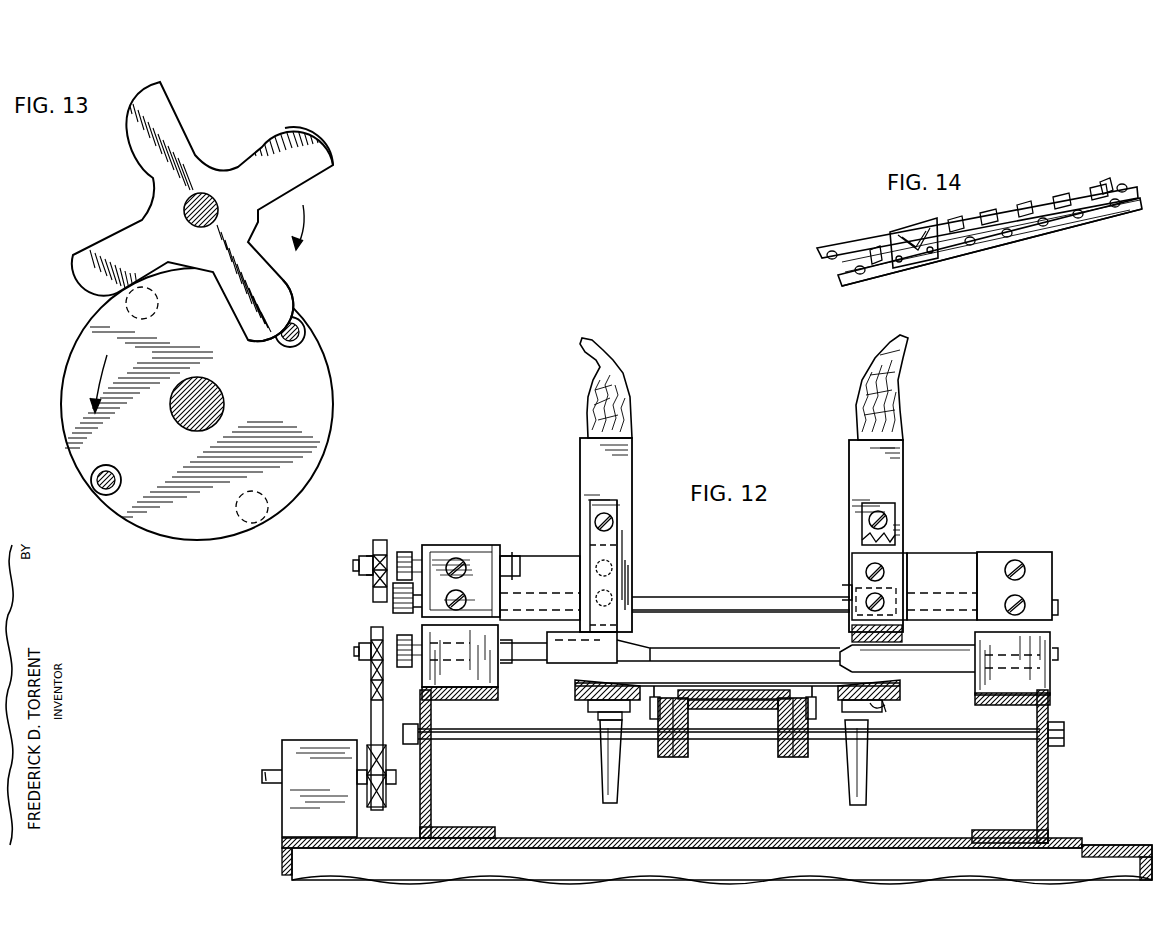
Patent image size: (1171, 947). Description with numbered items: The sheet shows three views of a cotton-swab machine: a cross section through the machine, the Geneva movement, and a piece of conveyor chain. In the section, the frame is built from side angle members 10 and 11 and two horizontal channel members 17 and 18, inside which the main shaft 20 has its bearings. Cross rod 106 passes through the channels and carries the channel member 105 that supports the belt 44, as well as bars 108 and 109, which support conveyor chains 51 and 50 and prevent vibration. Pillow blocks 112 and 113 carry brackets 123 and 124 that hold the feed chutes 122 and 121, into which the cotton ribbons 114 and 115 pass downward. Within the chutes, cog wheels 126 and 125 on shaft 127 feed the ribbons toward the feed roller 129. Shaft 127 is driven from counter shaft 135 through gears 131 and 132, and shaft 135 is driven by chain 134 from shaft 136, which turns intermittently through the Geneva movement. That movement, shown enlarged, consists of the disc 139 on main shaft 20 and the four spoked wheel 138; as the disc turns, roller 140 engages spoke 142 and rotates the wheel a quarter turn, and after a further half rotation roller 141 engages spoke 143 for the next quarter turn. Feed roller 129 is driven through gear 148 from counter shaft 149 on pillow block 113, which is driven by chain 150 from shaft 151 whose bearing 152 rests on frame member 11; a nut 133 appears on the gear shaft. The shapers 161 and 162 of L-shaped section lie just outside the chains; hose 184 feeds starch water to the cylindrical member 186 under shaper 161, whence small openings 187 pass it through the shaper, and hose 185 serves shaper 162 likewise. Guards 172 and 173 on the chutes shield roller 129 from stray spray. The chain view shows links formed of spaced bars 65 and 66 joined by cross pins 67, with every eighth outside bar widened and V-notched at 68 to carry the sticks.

In FIG. 12, the side angle member 10 is at (1104, 845).
In FIG. 12, the side angle member 11 is at (282, 862).
In FIG. 12, the channel member 17 is at (1048, 795).
In FIG. 12, the channel member 18 is at (431, 800).
In FIG. 13, the main shaft 20 is at (217, 407).
In FIG. 12, the belt 44 is at (762, 686).
In FIG. 12, the conveyor chain 50 is at (838, 706).
In FIG. 12, the conveyor chain 51 is at (652, 708).
In FIG. 14, the link bar 65 is at (1070, 188).
In FIG. 14, the link bar 66 is at (1098, 205).
In FIG. 14, the cross pin 67 is at (1112, 182).
In FIG. 14, the conveyor link bar 68 is at (913, 262).
In FIG. 12, the channel member 105 is at (742, 710).
In FIG. 12, the cross rod 106 is at (535, 740).
In FIG. 12, the bar 108 is at (666, 760).
In FIG. 12, the bar 109 is at (800, 760).
In FIG. 12, the pillow block 112 is at (1040, 550).
In FIG. 12, the pillow block 113 is at (490, 548).
In FIG. 12, the ribbon 114 is at (615, 378).
In FIG. 12, the ribbon 115 is at (895, 400).
In FIG. 12, the feed chute 121 is at (893, 485).
In FIG. 12, the feed chute 122 is at (620, 470).
In FIG. 12, the bracket 123 is at (958, 562).
In FIG. 12, the bracket 124 is at (500, 588).
In FIG. 12, the cog wheel 125 is at (852, 590).
In FIG. 12, the cog wheel 126 is at (625, 590).
In FIG. 12, the shaft 127 is at (712, 600).
In FIG. 12, the feed roller 129 is at (955, 672).
In FIG. 12, the gear 131 is at (393, 613).
In FIG. 12, the gear 132 is at (405, 552).
In FIG. 12, the nut 133 is at (372, 564).
In FIG. 12, the chain 134 is at (380, 540).
In FIG. 12, the counter shaft 135 is at (511, 555).
In FIG. 13, the shaft 136 is at (222, 223).
In FIG. 13, the four spoked wheel 138 is at (148, 204).
In FIG. 13, the disc 139 is at (325, 406).
In FIG. 13, the roller 140 is at (306, 332).
In FIG. 13, the roller 141 is at (100, 494).
In FIG. 13, the spoke 142 is at (283, 280).
In FIG. 13, the spoke 143 is at (305, 172).
In FIG. 12, the gear 148 is at (405, 668).
In FIG. 12, the counter shaft 149 is at (365, 655).
In FIG. 12, the chain 150 is at (371, 701).
In FIG. 12, the shaft 151 is at (273, 770).
In FIG. 12, the bearing 152 is at (300, 818).
In FIG. 12, the shaper 161 is at (875, 706).
In FIG. 12, the shaper 162 is at (582, 702).
In FIG. 12, the guard 172 is at (862, 520).
In FIG. 12, the guard 173 is at (552, 645).
In FIG. 12, the hose 184 is at (868, 782).
In FIG. 12, the hose 185 is at (605, 782).
In FIG. 12, the cylindrical member 186 is at (843, 702).
In FIG. 12, the openings 187 is at (902, 706).